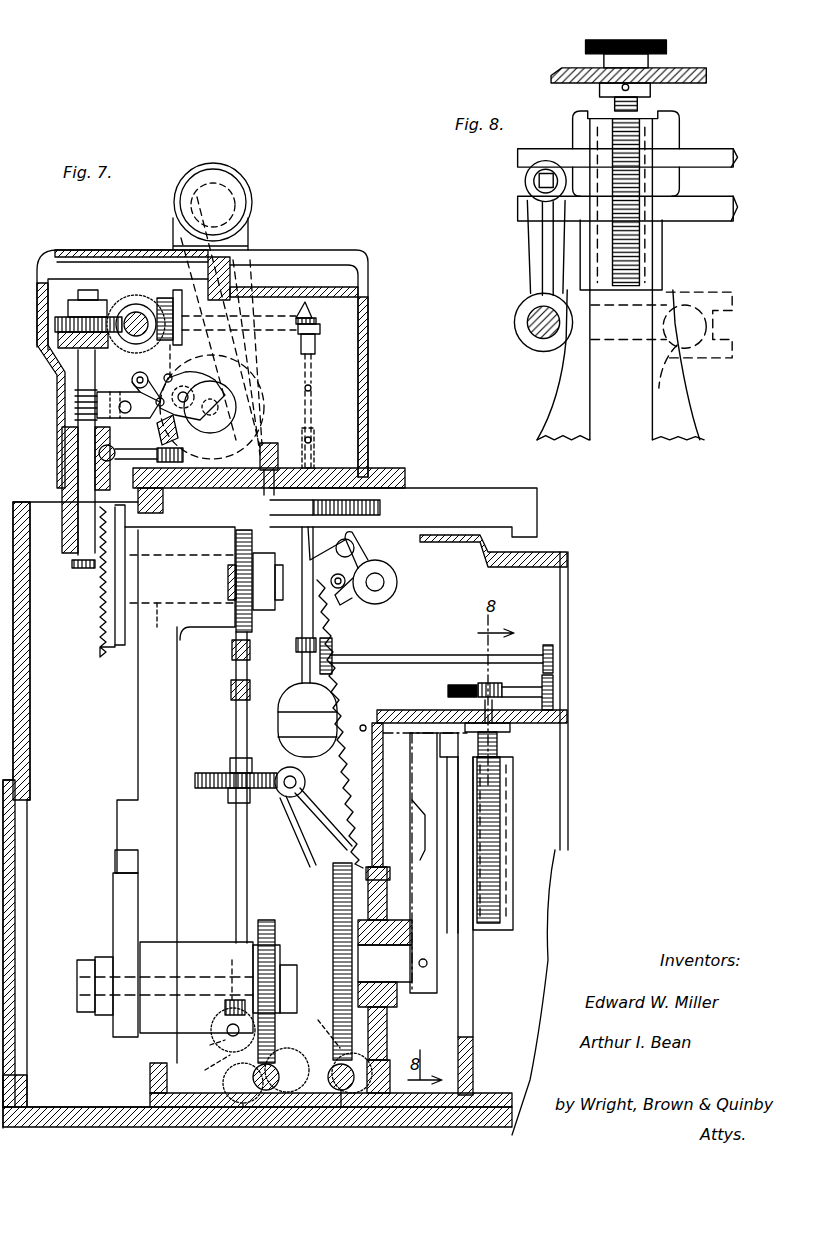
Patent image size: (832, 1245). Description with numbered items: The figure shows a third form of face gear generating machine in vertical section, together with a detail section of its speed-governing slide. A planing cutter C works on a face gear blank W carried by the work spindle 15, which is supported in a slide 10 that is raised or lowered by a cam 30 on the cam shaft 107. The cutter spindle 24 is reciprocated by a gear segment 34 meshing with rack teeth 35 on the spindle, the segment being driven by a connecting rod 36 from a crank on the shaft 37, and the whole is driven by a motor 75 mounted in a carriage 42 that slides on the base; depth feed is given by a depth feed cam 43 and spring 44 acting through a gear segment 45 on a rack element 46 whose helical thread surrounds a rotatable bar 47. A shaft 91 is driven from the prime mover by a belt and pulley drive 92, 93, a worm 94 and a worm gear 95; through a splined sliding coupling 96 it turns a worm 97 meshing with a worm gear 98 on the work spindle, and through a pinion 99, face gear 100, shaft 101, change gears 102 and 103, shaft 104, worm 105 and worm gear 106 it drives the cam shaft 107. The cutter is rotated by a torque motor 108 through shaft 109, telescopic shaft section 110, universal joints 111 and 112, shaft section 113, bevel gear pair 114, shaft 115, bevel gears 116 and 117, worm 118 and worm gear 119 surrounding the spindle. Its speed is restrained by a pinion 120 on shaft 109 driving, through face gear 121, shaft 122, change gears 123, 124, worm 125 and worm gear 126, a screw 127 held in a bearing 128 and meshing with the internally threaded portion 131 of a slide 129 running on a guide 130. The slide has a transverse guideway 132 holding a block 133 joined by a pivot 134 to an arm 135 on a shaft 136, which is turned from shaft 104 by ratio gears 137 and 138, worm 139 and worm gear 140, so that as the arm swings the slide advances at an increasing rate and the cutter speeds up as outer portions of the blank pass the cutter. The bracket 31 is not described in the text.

In FIG. 7, the slide 10 is at (123, 640).
In FIG. 7, the work spindle 15 is at (175, 627).
In FIG. 7, the cutter spindle 24 is at (78, 448).
In FIG. 7, the cam 30 is at (113, 929).
In FIG. 7, the plate 31 is at (115, 860).
In FIG. 7, the gear segment 34 is at (142, 372).
In FIG. 7, the rack teeth 35 is at (75, 396).
In FIG. 7, the connecting rod 36 is at (192, 372).
In FIG. 7, the shaft 37 is at (238, 405).
In FIG. 7, the carriage 42 is at (368, 318).
In FIG. 7, the depth feed cam 43 is at (396, 568).
In FIG. 7, the spring 44 is at (338, 632).
In FIG. 7, the gear segment 45 is at (360, 468).
In FIG. 7, the rack element 46 is at (390, 470).
In FIG. 7, the rotatable bar 47 is at (405, 508).
In FIG. 7, the motor 75 is at (240, 182).
In FIG. 7, the shaft 91 is at (236, 843).
In FIG. 7, the belt and pulley drive 92 is at (338, 812).
In FIG. 7, the belt and pulley drive 93 is at (287, 820).
In FIG. 7, the worm 94 is at (303, 780).
In FIG. 7, the worm gear 95 is at (212, 773).
In FIG. 7, the splined sliding coupling 96 is at (231, 690).
In FIG. 7, the worm 97 is at (233, 582).
In FIG. 7, the worm gear 98 is at (252, 540).
In FIG. 7, the pinion 99 is at (232, 975).
In FIG. 7, the face gear 100 is at (212, 1025).
In FIG. 7, the shaft 101 is at (212, 1045).
In FIG. 7, the change gear 102 is at (206, 1070).
In FIG. 7, the change gear 103 is at (225, 1083).
In FIG. 7, the shaft 104 is at (245, 1105).
In FIG. 7, the worm 105 is at (290, 1050).
In FIG. 7, the worm gear 106 is at (266, 918).
In FIG. 7, the cam shaft 107 is at (165, 945).
In FIG. 7, the torque motor 108 is at (282, 725).
In FIG. 7, the shaft 109 is at (306, 600).
In FIG. 7, the telescopic shaft section 110 is at (312, 420).
In FIG. 7, the universal joint 111 is at (312, 446).
In FIG. 7, the universal joint 112 is at (312, 388).
In FIG. 7, the shaft section 113 is at (320, 332).
In FIG. 7, the bevel gear pair 114 is at (315, 322).
In FIG. 7, the shaft 115 is at (278, 300).
In FIG. 7, the bevel gear 116 is at (165, 298).
In FIG. 7, the bevel gear 117 is at (118, 315).
In FIG. 7, the worm 118 is at (140, 300).
In FIG. 7, the worm gear 119 is at (72, 290).
In FIG. 7, the pinion 120 is at (296, 648).
In FIG. 7, the face gear 121 is at (302, 665).
In FIG. 7, the shaft 122 is at (380, 655).
In FIG. 7, the change gear 123 is at (553, 655).
In FIG. 7, the change gear 124 is at (553, 688).
In FIG. 7, the worm 125 is at (485, 684).
In FIG. 7, the worm gear 126 is at (448, 692).
In FIG. 8, the worm gear 126 is at (618, 37).
In FIG. 7, the screw 127 is at (500, 740).
In FIG. 8, the screw 127 is at (635, 98).
In FIG. 7, the bearing 128 is at (465, 730).
In FIG. 8, the bearing 128 is at (645, 70).
In FIG. 7, the slide 129 is at (513, 805).
In FIG. 8, the slide 129 is at (648, 245).
In FIG. 7, the guide 130 is at (473, 1010).
In FIG. 8, the guide 130 is at (637, 378).
In FIG. 7, the internally threaded portion 131 is at (500, 780).
In FIG. 8, the internally threaded portion 131 is at (630, 130).
In FIG. 8, the transverse guideway 132 is at (712, 168).
In FIG. 7, the block 133 is at (446, 790).
In FIG. 8, the block 133 is at (519, 166).
In FIG. 7, the pivot 134 is at (412, 812).
In FIG. 8, the pivot 134 is at (538, 174).
In FIG. 7, the arm 135 is at (437, 912).
In FIG. 8, the arm 135 is at (524, 250).
In FIG. 7, the shaft 136 is at (400, 990).
In FIG. 8, the shaft 136 is at (528, 315).
In FIG. 7, the ratio gear 137 is at (326, 1025).
In FIG. 7, the ratio gear 138 is at (340, 1055).
In FIG. 7, the worm 139 is at (326, 1105).
In FIG. 7, the worm gear 140 is at (333, 905).
In FIG. 7, the cutter C is at (72, 565).
In FIG. 7, the work piece W is at (100, 592).